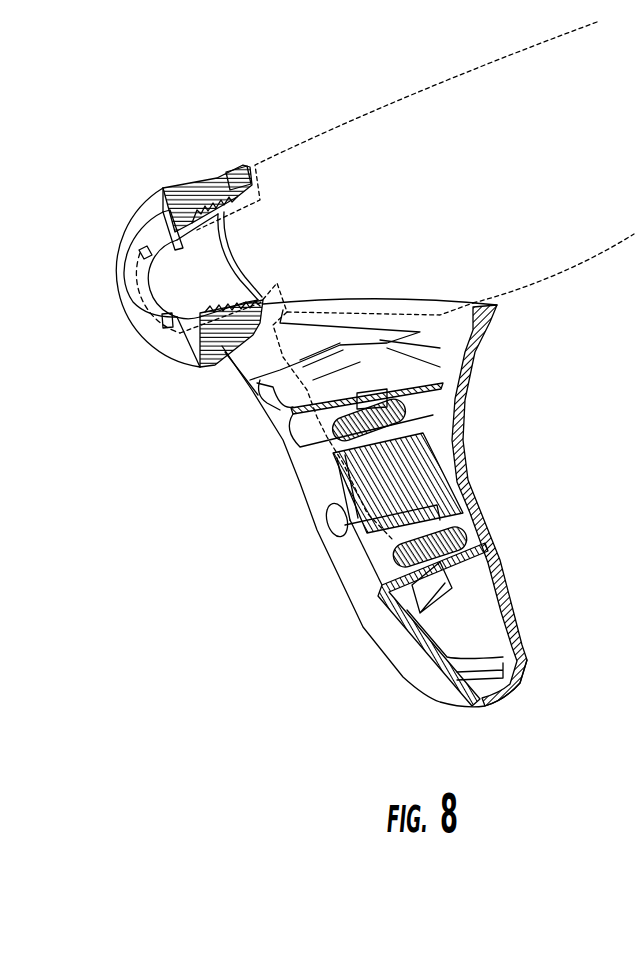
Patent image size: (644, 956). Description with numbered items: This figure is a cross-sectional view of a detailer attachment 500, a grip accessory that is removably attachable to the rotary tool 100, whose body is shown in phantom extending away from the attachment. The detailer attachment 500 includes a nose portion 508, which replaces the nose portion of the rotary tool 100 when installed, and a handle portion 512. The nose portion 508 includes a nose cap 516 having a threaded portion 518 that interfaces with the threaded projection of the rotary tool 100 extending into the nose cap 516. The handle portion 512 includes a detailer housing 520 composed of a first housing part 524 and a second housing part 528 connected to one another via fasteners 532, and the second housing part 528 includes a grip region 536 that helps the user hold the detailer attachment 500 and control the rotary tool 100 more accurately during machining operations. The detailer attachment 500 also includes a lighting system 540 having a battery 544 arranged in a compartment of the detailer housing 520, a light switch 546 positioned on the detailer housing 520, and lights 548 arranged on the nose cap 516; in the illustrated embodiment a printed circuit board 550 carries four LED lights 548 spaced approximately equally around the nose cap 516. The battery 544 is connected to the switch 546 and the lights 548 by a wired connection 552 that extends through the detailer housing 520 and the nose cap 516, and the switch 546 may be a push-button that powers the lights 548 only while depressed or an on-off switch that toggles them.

The rotary tool 100 is at (343, 120).
The detailer attachment 500 is at (128, 134).
The nose portion 508 is at (118, 373).
The handle portion 512 is at (507, 752).
The nose cap 516 is at (204, 362).
The threaded portion 518 is at (203, 200).
The detailer housing 520 is at (337, 707).
The first housing part 524 is at (375, 634).
The second housing part 528 is at (480, 578).
The fasteners 532 is at (403, 547).
The grip region 536 is at (468, 465).
The lighting system 540 is at (175, 478).
The battery 544 is at (410, 463).
The light switch 546 is at (330, 522).
The lights 548 is at (165, 322).
The printed circuit board 550 is at (145, 231).
The wired connection 552 is at (283, 387).